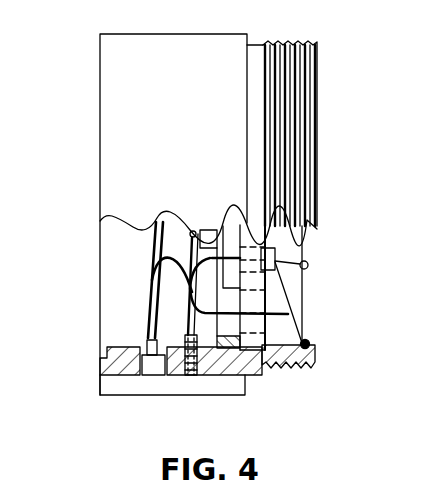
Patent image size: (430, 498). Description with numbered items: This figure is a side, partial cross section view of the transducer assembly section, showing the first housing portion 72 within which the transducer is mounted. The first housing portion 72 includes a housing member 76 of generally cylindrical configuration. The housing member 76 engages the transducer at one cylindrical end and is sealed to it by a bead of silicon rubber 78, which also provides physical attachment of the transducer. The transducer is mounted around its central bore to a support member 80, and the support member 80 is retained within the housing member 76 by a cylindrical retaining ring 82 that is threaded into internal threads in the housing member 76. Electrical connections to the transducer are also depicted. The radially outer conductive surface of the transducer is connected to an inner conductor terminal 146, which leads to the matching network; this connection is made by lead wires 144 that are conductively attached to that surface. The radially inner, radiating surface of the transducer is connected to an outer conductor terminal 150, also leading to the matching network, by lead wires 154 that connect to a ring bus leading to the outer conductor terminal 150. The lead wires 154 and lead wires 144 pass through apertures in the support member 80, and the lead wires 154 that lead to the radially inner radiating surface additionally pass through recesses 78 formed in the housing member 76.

The first housing portion 72 is at (84, 437).
The housing member 76 is at (233, 375).
The bead of silicon rubber 78 is at (309, 344).
The support member 80 is at (262, 342).
The cylindrical retaining ring 82 is at (258, 366).
The lead wires 144 is at (147, 259).
The inner conductor terminal 146 is at (147, 343).
The outer conductor terminal 150 is at (192, 375).
The lead wires 154 is at (287, 262).